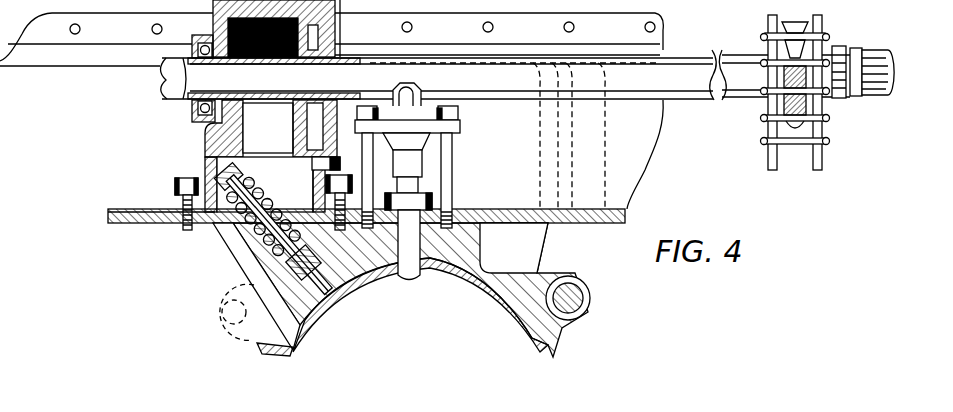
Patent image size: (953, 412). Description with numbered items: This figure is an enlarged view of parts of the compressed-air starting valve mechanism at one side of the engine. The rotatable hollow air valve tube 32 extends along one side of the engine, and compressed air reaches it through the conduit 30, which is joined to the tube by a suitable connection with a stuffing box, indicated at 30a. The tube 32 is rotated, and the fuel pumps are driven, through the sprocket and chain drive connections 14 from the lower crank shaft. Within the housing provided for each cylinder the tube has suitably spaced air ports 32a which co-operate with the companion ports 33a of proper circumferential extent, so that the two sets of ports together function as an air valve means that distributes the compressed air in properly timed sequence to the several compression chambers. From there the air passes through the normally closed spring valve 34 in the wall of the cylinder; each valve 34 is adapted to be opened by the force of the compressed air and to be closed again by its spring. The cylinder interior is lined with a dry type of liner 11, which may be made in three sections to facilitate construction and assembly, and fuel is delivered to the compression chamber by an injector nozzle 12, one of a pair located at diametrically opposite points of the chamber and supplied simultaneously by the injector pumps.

The liner 11 is at (502, 315).
The injector nozzle 12 is at (406, 281).
The sprocket and chain drive connection 14 is at (822, 160).
The conduit 30 is at (878, 60).
The stuffing box connection 30a is at (840, 45).
The rotatable hollow air valve tube 32 is at (172, 88).
The air port 32a is at (268, 63).
The companion port 33a is at (265, 110).
The spring valve 34 is at (331, 298).